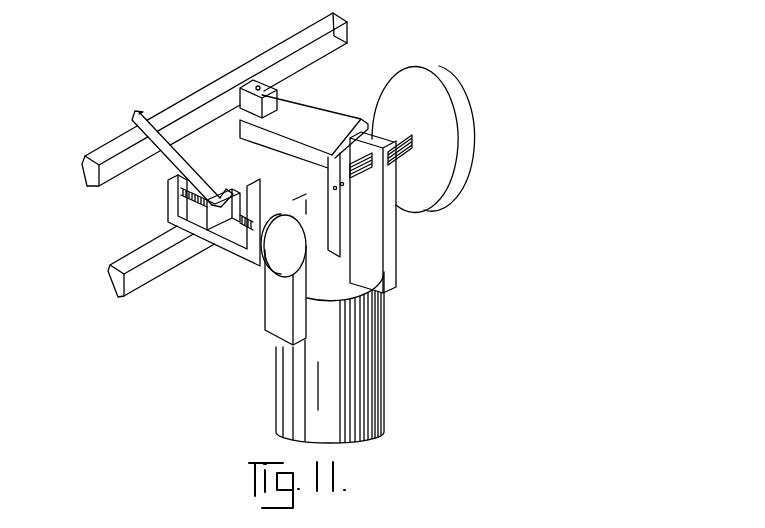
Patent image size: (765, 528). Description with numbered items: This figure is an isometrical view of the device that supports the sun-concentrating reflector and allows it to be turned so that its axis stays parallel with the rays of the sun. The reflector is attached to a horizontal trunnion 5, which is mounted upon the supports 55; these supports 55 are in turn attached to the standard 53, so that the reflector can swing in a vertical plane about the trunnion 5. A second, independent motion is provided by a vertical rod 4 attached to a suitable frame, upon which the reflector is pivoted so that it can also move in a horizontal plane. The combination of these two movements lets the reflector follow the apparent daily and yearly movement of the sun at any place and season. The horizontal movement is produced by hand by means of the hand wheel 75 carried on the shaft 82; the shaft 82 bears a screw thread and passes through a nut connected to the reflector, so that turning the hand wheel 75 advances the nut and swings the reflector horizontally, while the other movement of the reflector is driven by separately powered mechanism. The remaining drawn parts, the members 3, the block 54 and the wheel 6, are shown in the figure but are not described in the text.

The guide rail 3 is at (226, 153).
The vertical rod 4 is at (241, 105).
The clamp block 54 is at (267, 105).
The horizontal trunnion 5 is at (414, 138).
The wheel 6 is at (456, 99).
The supports 55 is at (326, 238).
The hand wheel 75 is at (283, 245).
The shaft 82 is at (240, 225).
The standard 53 is at (346, 357).